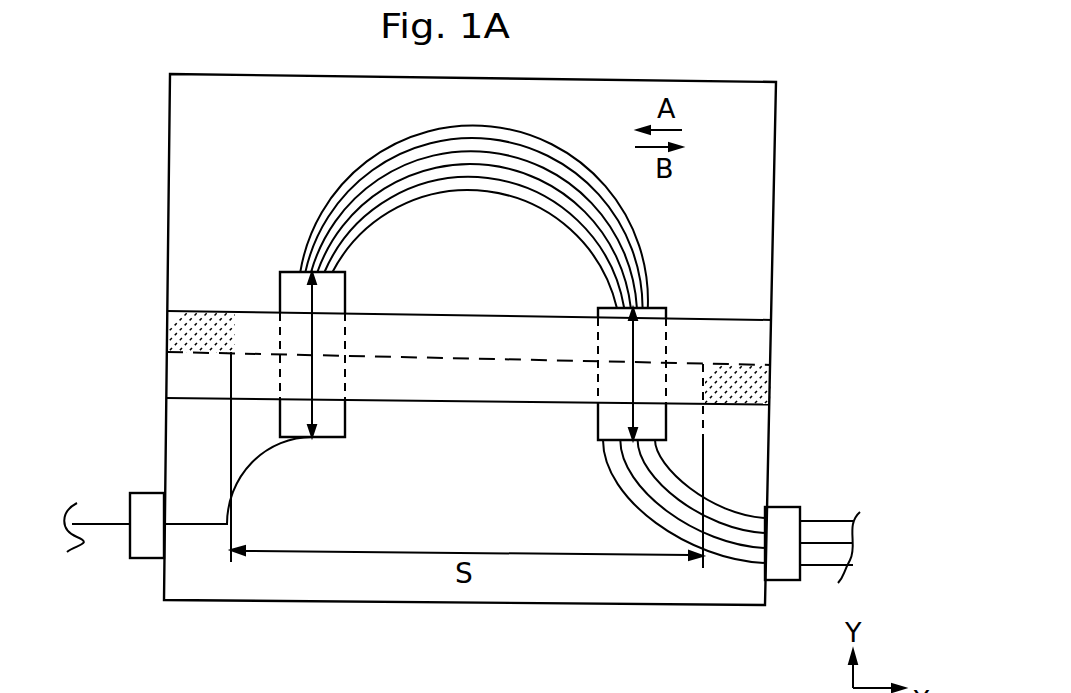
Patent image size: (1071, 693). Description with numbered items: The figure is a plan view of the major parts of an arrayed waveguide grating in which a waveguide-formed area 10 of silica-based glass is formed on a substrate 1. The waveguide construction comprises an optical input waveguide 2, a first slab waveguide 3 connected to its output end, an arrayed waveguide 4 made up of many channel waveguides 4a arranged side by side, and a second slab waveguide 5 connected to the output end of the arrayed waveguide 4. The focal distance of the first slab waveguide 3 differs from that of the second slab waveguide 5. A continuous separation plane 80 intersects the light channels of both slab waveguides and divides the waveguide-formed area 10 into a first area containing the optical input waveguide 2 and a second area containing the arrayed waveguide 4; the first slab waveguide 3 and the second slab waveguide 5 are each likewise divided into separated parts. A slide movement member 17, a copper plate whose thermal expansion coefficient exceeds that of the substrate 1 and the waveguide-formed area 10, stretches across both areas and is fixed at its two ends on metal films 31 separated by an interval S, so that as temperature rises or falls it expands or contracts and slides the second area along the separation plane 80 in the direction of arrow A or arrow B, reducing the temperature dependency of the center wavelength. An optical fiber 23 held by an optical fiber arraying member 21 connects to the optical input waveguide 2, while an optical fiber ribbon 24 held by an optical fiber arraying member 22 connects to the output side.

The substrate 1 is at (762, 302).
The optical input waveguide 2 is at (185, 524).
The first slab waveguide 3 is at (345, 308).
The arrayed waveguide 4 is at (423, 212).
The channel waveguide 4a is at (533, 137).
The second slab waveguide 5 is at (662, 328).
The waveguide-formed area 10 is at (752, 257).
The slide movement member 17 is at (508, 352).
The optical fiber arraying member 21 is at (147, 543).
The optical fiber arraying member 22 is at (782, 565).
The optical fiber 23 is at (100, 522).
The optical fiber ribbon 24 is at (822, 558).
The metal film 31 is at (162, 353).
The separation plane 80 is at (460, 373).